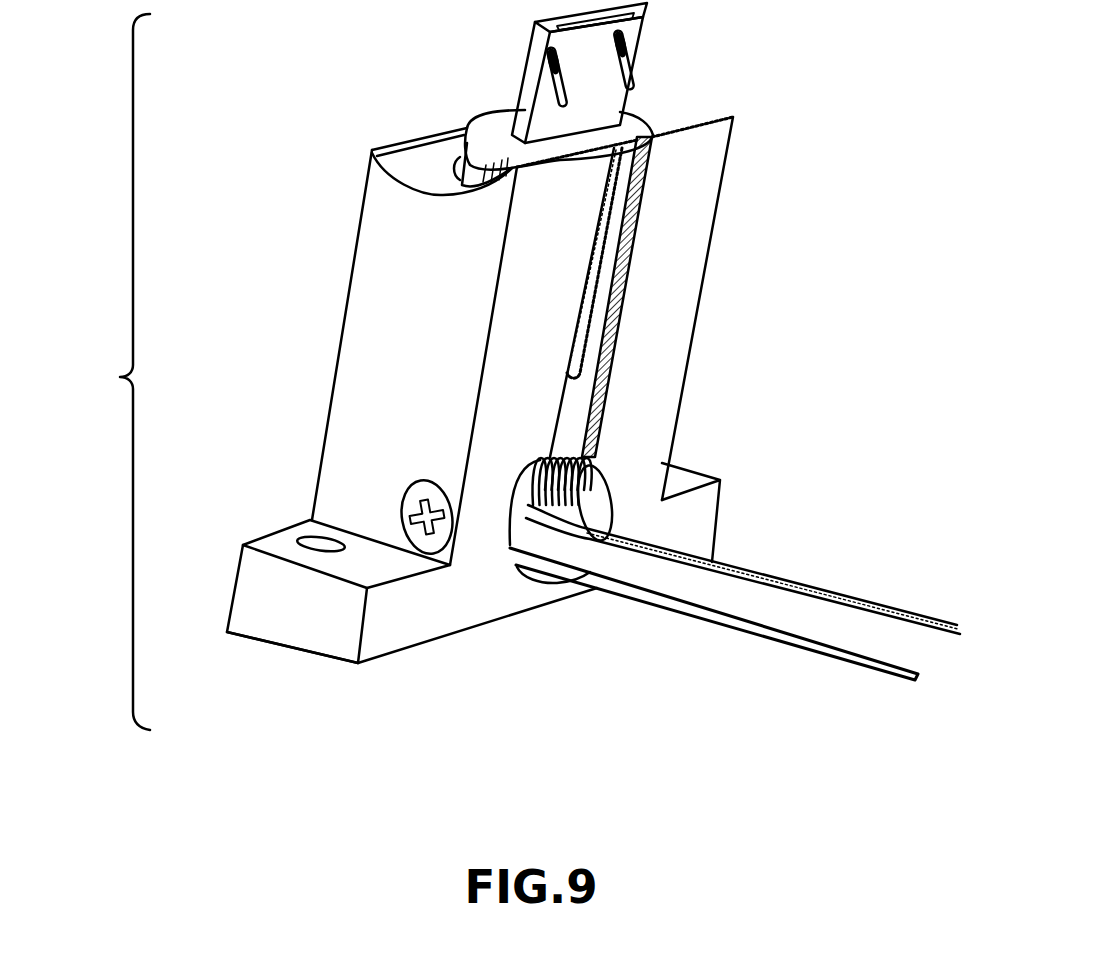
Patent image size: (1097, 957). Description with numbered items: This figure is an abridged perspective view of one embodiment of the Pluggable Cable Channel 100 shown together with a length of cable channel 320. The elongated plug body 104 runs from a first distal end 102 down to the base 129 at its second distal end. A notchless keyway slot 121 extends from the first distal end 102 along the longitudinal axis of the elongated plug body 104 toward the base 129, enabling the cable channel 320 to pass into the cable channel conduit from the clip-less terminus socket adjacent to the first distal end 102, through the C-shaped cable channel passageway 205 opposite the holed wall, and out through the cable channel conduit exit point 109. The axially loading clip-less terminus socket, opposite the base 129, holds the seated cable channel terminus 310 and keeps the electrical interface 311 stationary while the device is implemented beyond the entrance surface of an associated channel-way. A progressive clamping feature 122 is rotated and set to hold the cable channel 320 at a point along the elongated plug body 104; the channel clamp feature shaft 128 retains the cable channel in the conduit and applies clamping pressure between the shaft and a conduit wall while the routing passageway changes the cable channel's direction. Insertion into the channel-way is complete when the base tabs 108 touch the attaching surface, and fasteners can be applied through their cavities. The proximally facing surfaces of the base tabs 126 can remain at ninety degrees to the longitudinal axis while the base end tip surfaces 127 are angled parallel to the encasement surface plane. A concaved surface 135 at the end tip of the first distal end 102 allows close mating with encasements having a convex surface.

The connector assembly 100 is at (97, 372).
The concaved surface 135 is at (427, 170).
The elongated plug body 104 is at (427, 277).
The notchless keyway slot 121 is at (580, 290).
The progressive clamping feature 122 is at (402, 480).
The proximally facing surfaces of the base tabs 126 is at (287, 547).
The base tabs 108 is at (273, 600).
The base end tip surfaces 127 is at (300, 650).
The base 129 is at (487, 627).
The cable channel conduit exit point 109 is at (552, 587).
The cable channel 320 is at (760, 600).
The channel clamp feature shaft 128 is at (606, 500).
The C-shaped cable channel passageway 205 is at (580, 398).
The first distal end 102 is at (688, 170).
The cable channel terminus 310 is at (640, 130).
The electrical interface 311 is at (600, 50).